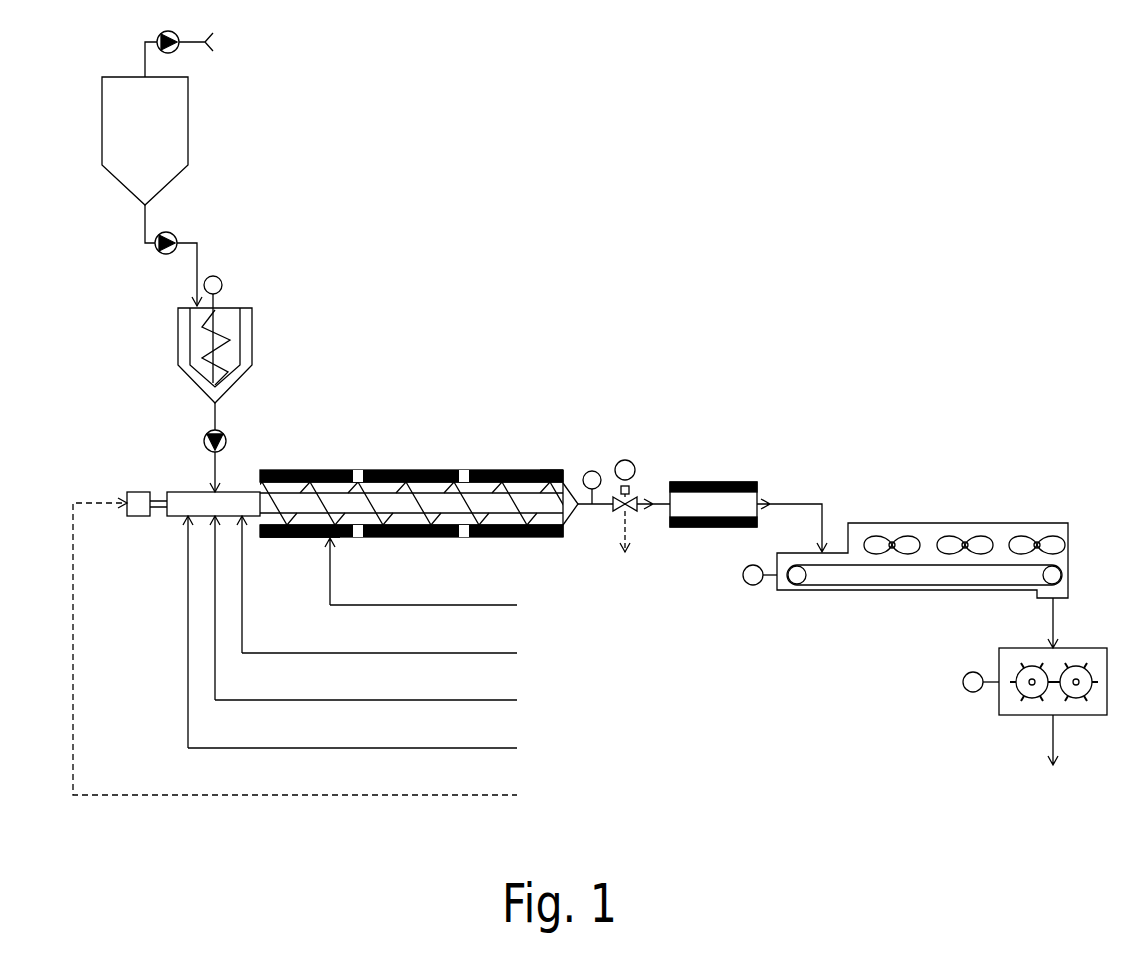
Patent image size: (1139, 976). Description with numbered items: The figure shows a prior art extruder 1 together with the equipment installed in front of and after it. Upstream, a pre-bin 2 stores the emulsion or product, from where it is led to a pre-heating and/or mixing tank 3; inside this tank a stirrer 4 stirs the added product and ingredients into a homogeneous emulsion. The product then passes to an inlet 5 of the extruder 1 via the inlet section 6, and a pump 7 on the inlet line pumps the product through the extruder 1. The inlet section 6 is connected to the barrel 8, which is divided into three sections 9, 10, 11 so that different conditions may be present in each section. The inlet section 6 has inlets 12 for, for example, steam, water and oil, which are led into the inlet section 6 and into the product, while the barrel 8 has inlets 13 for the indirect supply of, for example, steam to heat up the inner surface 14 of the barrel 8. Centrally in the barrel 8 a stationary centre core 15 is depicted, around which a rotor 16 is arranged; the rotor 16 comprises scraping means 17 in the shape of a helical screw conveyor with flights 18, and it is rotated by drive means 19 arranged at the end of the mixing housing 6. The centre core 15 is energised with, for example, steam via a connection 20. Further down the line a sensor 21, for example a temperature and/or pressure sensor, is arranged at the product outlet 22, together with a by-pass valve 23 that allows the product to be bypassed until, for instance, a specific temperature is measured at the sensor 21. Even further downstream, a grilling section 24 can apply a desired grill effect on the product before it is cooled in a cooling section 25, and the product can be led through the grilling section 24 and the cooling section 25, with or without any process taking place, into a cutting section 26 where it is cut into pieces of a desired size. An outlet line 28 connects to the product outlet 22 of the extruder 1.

The extruder 1 is at (413, 440).
The pre-bin 2 is at (178, 120).
The pre-heating and/or mixing tank 3 is at (248, 320).
The stirrer 4 is at (217, 320).
The inlet 5 is at (218, 488).
The inlet section 6 is at (185, 498).
The pump 7 is at (225, 437).
The barrel 8 is at (565, 485).
The barrel section 9 is at (320, 470).
The barrel section 10 is at (438, 470).
The barrel section 11 is at (521, 490).
The inlets 12 is at (528, 662).
The inlets 13 is at (528, 596).
The inner surface 14 is at (530, 526).
The centre core 15 is at (358, 500).
The rotor 16 is at (480, 500).
The scraping means 17 is at (318, 505).
The flights 18 is at (293, 576).
The drive means 19 is at (130, 493).
The connection 20 is at (528, 786).
The sensor 21 is at (597, 505).
The product outlet 22 is at (598, 475).
The by-pass valve 23 is at (634, 480).
The grilling section 24 is at (688, 528).
The cooling section 25 is at (928, 535).
The cutting section 26 is at (1067, 655).
The outlet line 28 is at (548, 470).